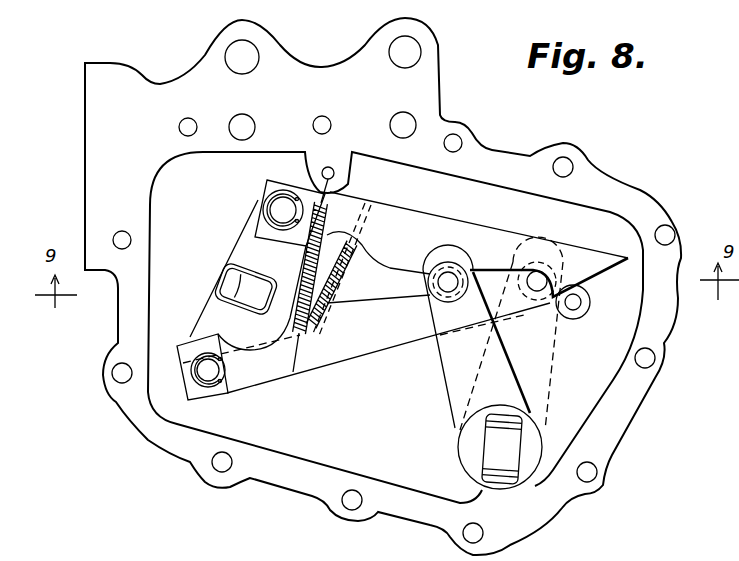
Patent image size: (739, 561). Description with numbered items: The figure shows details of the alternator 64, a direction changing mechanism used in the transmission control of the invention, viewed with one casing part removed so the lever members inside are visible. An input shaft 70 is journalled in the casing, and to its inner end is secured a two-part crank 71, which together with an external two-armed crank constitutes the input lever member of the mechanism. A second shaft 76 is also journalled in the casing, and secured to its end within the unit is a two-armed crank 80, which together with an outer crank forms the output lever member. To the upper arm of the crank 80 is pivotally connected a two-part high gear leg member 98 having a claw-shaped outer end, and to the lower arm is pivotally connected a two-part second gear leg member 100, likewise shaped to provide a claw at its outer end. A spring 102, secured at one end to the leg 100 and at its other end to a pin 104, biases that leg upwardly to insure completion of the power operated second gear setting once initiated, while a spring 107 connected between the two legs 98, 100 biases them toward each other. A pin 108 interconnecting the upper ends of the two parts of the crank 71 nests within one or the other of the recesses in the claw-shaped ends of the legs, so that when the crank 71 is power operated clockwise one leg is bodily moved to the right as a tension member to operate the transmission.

The alternator 64 is at (175, 462).
The shaft 70 is at (490, 443).
The two-part crank 71 is at (453, 363).
The shaft 76 is at (243, 277).
The two-armed crank 80 is at (213, 312).
The two-part high gear leg member 98 is at (448, 226).
The two-part second gear leg member 100 is at (352, 348).
The spring 102 is at (344, 199).
The pin 104 is at (330, 167).
The spring 107 is at (347, 270).
The pin 108 is at (540, 268).